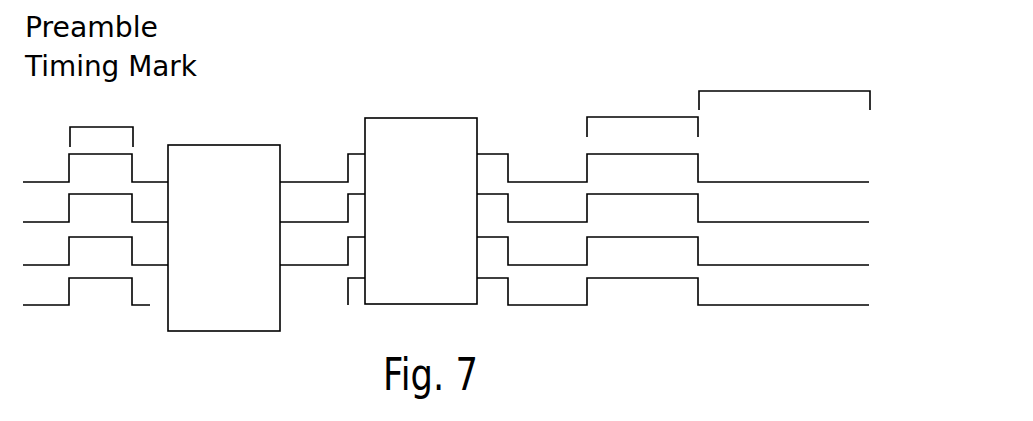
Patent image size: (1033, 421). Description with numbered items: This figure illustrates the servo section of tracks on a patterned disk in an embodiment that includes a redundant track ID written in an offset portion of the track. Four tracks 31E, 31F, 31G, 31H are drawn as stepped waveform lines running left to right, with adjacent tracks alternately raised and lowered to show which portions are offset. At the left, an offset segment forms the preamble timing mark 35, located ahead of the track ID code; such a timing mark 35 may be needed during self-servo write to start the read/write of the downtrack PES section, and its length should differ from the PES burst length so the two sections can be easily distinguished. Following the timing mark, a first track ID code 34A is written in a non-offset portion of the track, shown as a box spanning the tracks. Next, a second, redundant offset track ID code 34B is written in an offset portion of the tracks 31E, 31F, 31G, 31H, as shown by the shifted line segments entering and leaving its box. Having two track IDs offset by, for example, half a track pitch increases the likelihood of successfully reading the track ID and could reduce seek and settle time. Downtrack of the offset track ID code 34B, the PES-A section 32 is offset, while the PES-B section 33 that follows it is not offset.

The preamble timing mark 35 is at (101, 127).
The first track ID code 34A is at (211, 140).
The offset track ID code 34B is at (407, 127).
The PES-A section 32 is at (643, 117).
The PES-B section 33 is at (785, 91).
The track 31E is at (820, 182).
The track 31F is at (846, 223).
The track 31G is at (843, 264).
The track 31H is at (822, 306).